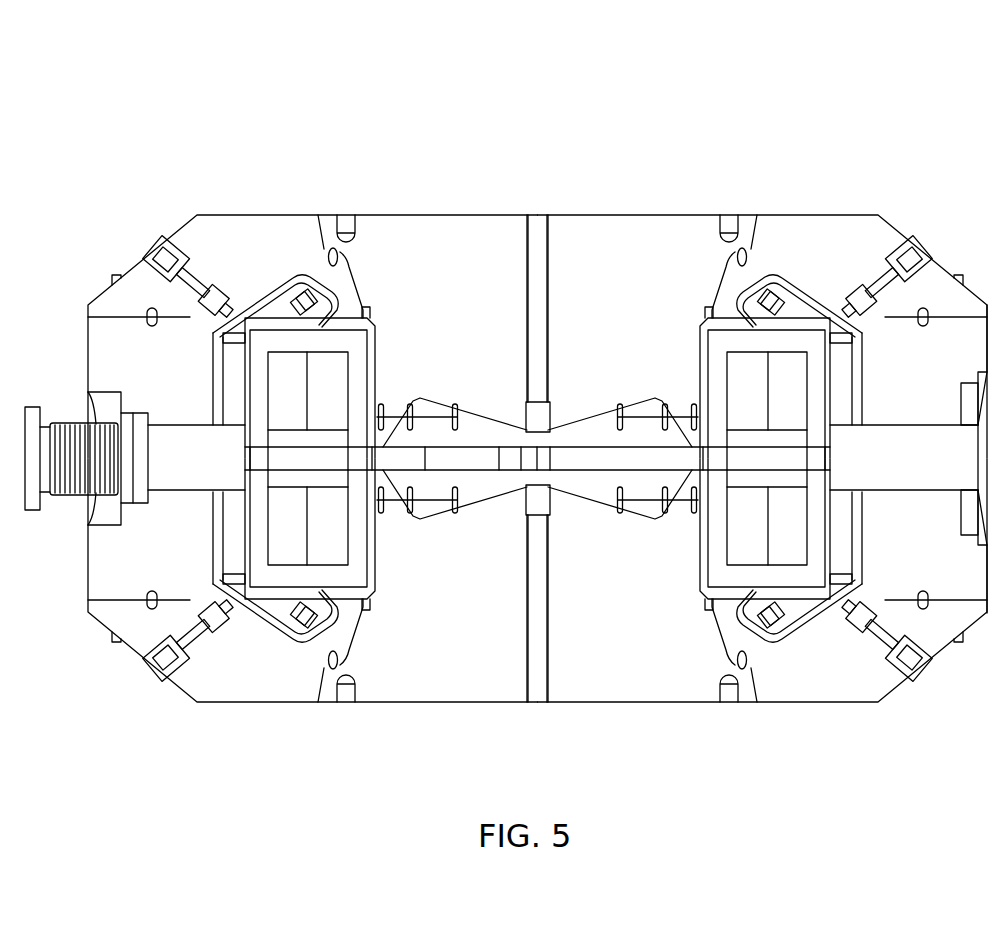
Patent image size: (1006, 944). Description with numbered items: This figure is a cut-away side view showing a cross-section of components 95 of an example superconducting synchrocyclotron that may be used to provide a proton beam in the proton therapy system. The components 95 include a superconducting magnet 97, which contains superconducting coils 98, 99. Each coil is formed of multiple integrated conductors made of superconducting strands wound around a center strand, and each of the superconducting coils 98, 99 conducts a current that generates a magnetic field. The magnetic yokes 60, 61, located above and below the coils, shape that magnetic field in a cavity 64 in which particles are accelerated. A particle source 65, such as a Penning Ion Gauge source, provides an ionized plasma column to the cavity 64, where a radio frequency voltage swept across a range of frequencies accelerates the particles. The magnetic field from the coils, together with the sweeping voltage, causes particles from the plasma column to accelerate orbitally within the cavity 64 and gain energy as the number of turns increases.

The components 95 is at (316, 126).
The superconducting magnet 97 is at (78, 257).
The magnetic yoke 60 is at (458, 236).
The magnetic yoke 61 is at (455, 683).
The cavity 64 is at (462, 486).
The particle source 65 is at (539, 504).
The superconducting coil 98 is at (340, 383).
The superconducting coil 99 is at (343, 555).